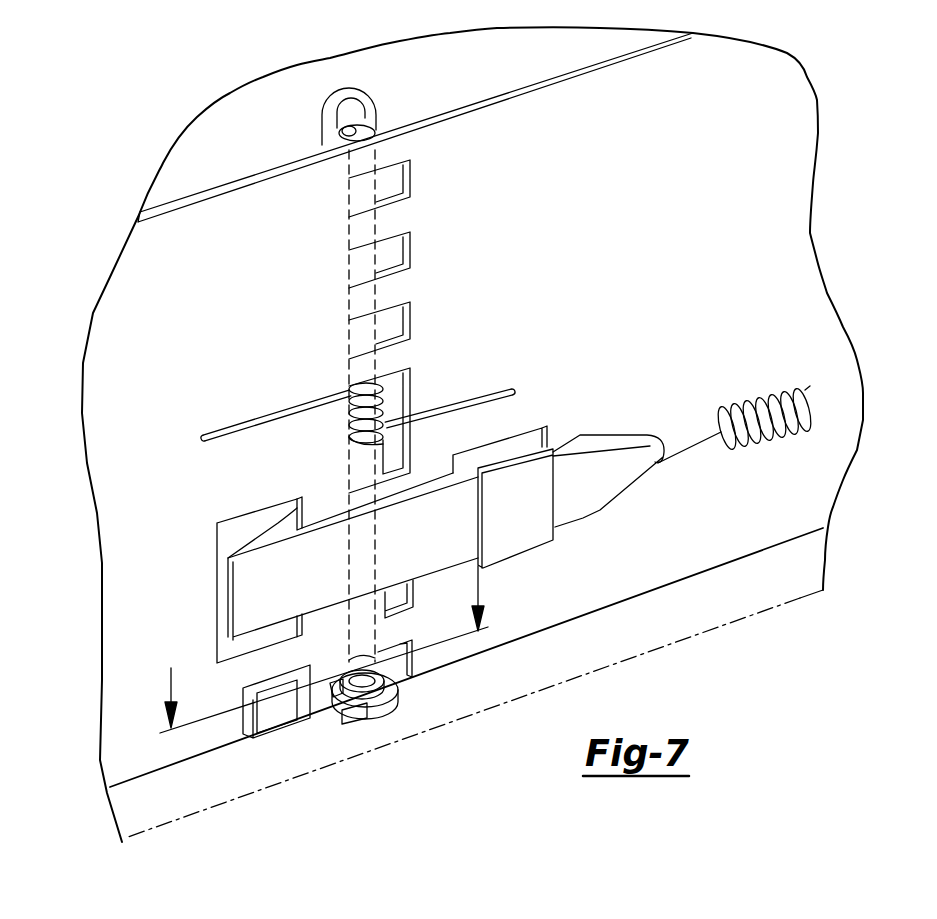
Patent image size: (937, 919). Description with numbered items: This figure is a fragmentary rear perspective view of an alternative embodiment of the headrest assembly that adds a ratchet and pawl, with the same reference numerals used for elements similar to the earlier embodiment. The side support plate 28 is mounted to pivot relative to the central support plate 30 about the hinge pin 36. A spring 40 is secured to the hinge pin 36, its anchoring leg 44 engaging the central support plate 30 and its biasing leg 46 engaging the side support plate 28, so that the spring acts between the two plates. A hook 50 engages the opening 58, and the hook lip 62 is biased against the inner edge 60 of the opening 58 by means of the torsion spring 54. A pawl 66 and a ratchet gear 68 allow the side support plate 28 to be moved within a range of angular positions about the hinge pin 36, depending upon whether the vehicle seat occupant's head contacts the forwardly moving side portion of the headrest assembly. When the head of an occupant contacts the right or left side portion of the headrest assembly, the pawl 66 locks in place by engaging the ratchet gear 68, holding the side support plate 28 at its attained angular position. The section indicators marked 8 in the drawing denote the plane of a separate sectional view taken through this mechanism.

The side support plate 28 is at (133, 287).
The central support plate 30 is at (775, 80).
The hinge pin 36 is at (368, 108).
The spring 40 is at (383, 417).
The anchoring leg 44 is at (495, 391).
The biasing leg 46 is at (248, 422).
The hook 50 is at (244, 600).
The torsion spring 54 is at (735, 408).
The opening 58 is at (217, 547).
The inner edge 60 is at (288, 503).
The hook lip 62 is at (283, 521).
The pawl 66 is at (337, 708).
The ratchet gear 68 is at (393, 717).
The section line 8- 8 is at (329, 650).